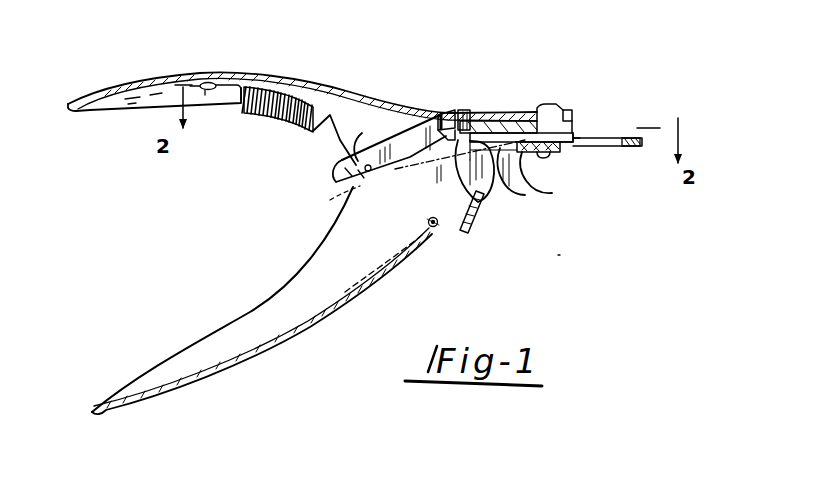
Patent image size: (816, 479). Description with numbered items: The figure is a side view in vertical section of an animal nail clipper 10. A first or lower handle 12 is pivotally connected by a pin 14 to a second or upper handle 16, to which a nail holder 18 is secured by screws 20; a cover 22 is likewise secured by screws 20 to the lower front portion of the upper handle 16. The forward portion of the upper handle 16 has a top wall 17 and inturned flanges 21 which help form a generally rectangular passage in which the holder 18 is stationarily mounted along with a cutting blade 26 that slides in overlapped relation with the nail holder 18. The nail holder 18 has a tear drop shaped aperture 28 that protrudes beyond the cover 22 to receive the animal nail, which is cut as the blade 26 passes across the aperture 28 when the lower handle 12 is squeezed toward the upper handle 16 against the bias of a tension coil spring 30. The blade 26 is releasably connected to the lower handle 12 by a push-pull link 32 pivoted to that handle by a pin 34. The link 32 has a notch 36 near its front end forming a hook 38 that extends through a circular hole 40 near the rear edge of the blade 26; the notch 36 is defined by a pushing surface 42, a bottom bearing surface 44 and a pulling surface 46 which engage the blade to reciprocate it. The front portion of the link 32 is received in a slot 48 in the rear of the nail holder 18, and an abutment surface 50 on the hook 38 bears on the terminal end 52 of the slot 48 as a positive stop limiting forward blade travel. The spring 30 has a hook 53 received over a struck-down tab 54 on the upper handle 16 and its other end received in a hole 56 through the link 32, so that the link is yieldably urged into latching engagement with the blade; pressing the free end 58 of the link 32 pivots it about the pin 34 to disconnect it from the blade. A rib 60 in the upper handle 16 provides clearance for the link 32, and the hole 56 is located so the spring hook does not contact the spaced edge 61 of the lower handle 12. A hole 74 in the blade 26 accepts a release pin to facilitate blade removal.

The animal nail clipper 10 is at (560, 255).
The lower handle 12 is at (228, 370).
The pin 14 is at (437, 226).
The upper handle 16 is at (268, 74).
The top wall 17 is at (566, 125).
The nail holder 18 is at (645, 149).
The screws 20 is at (550, 157).
The inturned flanges 21 is at (574, 146).
The cover 22 is at (480, 213).
The cutting blade 26 is at (548, 108).
The aperture 28 is at (630, 138).
The tension coil spring 30 is at (290, 130).
The push-pull link 32 is at (414, 166).
The pin 34 is at (335, 184).
The notch 36 is at (463, 126).
The hook 38 is at (500, 125).
The circular hole 40 is at (486, 130).
The pushing surface 42 is at (440, 127).
The bottom bearing surface 44 is at (446, 114).
The pulling surface 46 is at (480, 207).
The slot 48 is at (506, 165).
The abutment surface 50 is at (518, 178).
The terminal end 52 is at (545, 156).
The hook 53 is at (214, 82).
The struck-down tab 54 is at (208, 92).
The hole 56 is at (350, 161).
The free end 58 is at (348, 184).
The rib 60 is at (342, 92).
The spaced edge 61 is at (328, 201).
The hole 74 is at (578, 136).